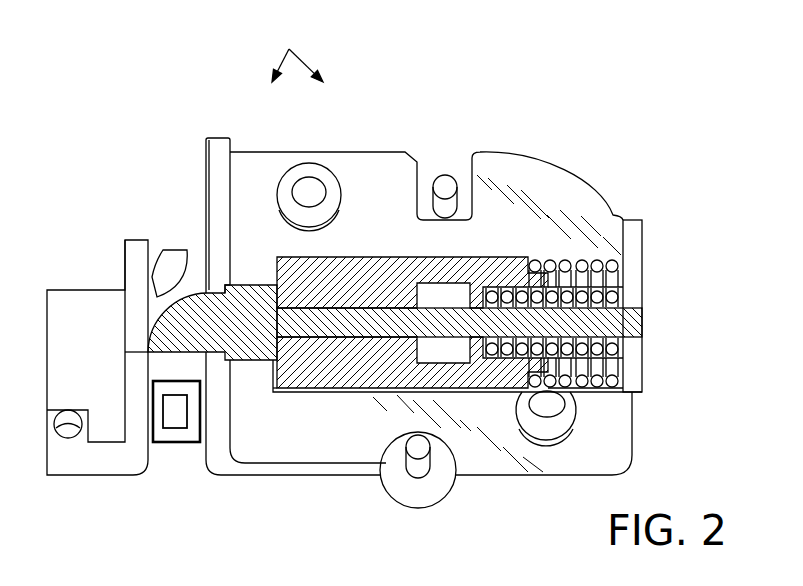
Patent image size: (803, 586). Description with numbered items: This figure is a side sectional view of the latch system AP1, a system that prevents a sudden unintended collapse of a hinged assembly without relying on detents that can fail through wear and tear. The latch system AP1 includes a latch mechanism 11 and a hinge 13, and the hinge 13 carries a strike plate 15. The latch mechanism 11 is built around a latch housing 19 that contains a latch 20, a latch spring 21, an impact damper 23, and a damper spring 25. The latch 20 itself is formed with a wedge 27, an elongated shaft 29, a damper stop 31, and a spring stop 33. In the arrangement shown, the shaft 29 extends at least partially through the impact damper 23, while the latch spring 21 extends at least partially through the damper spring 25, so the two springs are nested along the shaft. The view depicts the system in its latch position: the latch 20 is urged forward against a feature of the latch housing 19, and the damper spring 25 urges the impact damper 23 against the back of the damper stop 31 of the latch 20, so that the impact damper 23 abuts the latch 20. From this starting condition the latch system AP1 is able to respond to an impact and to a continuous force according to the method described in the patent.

The latch system AP1 is at (297, 51).
The latch mechanism 11 is at (594, 107).
The hinge 13 is at (108, 336).
The strike plate 15 is at (188, 248).
The latch housing 19 is at (412, 299).
The latch 20 is at (655, 318).
The latch spring 21 is at (615, 393).
The impact damper 23 is at (367, 392).
The damper spring 25 is at (548, 258).
The wedge 27 is at (207, 220).
The elongated shaft 29 is at (395, 275).
The damper stop 31 is at (245, 283).
The spring stop 33 is at (472, 370).